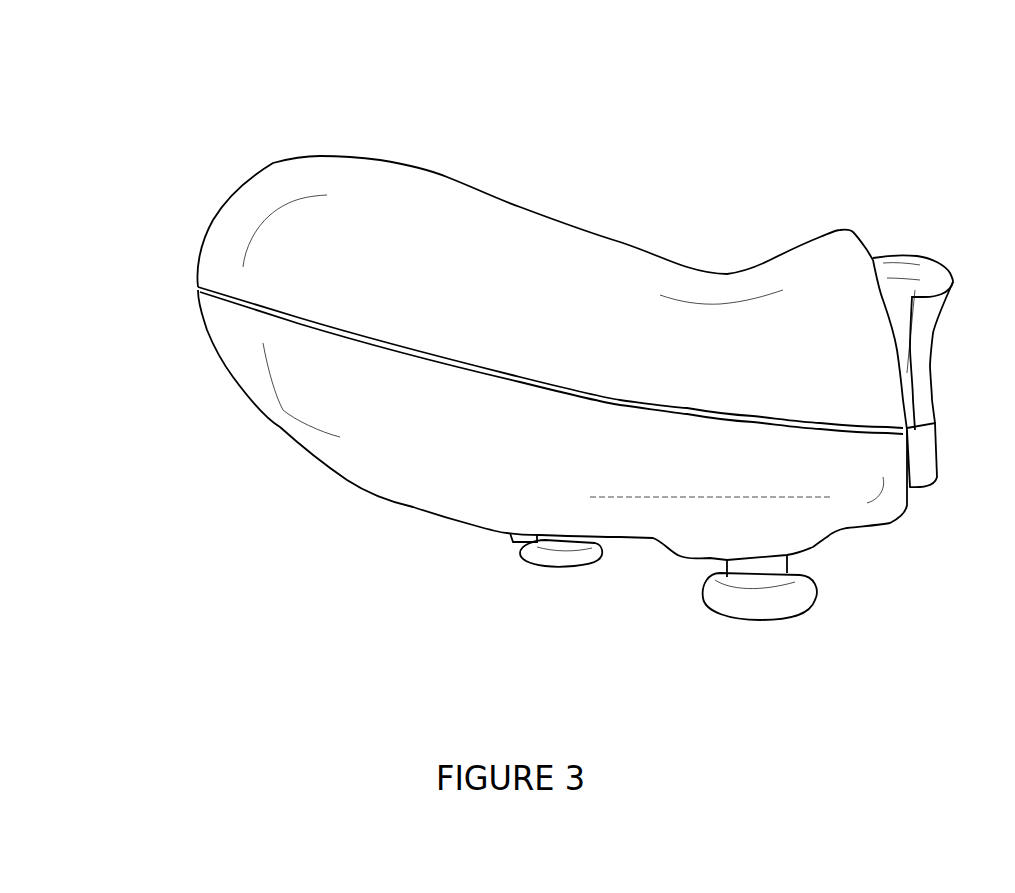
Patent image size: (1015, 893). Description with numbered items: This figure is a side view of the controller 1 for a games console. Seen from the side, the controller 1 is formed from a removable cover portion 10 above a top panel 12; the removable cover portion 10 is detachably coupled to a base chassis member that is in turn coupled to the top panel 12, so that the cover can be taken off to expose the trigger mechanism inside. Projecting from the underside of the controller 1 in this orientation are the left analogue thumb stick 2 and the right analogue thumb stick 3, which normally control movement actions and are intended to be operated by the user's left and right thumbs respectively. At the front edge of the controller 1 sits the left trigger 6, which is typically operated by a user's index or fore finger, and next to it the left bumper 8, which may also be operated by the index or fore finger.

The controller 1 is at (165, 177).
The left analogue thumb stick 2 is at (767, 603).
The right analogue thumb stick 3 is at (573, 553).
The left trigger 6 is at (900, 267).
The left bumper 8 is at (923, 467).
The removable cover portion 10 is at (327, 180).
The top panel 12 is at (363, 450).